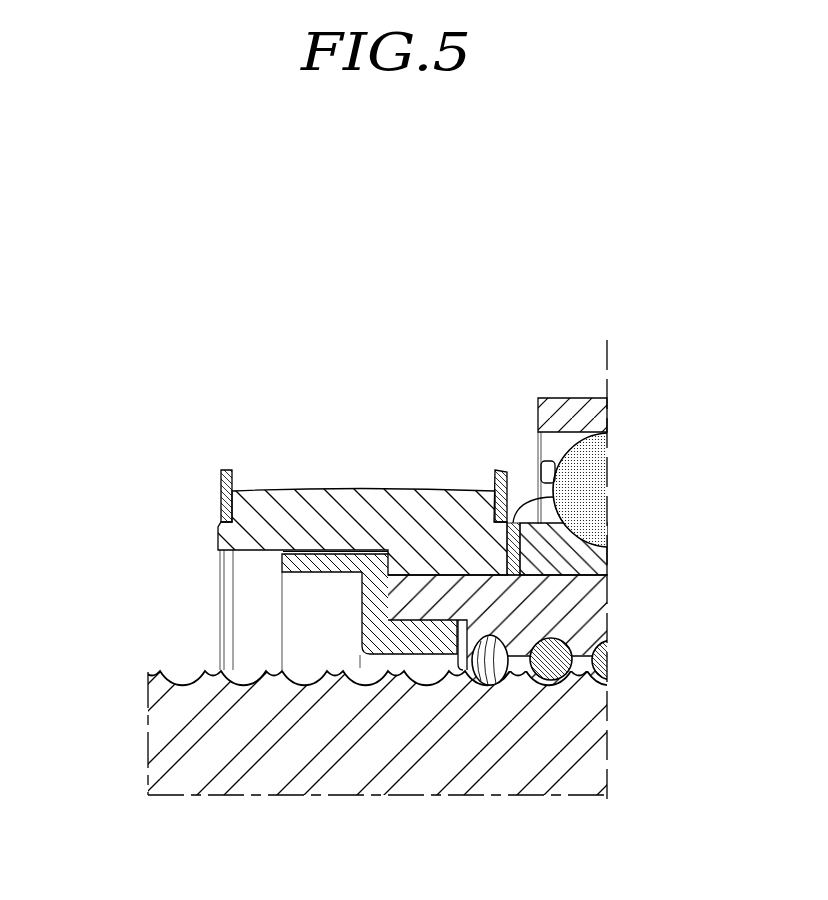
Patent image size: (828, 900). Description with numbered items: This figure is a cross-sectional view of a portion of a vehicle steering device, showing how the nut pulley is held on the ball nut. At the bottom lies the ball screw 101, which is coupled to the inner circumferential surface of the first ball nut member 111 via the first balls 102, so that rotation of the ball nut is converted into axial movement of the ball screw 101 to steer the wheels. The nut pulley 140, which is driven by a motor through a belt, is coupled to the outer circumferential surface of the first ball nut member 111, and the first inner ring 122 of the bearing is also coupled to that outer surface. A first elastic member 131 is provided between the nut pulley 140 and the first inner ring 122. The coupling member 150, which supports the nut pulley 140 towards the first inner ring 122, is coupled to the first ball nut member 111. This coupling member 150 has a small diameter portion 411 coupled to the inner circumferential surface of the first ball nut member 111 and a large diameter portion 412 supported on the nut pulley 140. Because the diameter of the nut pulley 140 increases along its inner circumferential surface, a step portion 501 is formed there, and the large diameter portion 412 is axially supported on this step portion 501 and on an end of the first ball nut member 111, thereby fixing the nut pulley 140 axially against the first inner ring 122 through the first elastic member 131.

The ball screw 101 is at (381, 773).
The first balls 102 is at (575, 640).
The first ball nut member 111 is at (597, 607).
The first inner ring 122 is at (590, 559).
The first elastic member 131 is at (560, 497).
The nut pulley 140 is at (316, 492).
The coupling member 150 is at (256, 594).
The small diameter portion 411 is at (362, 640).
The large diameter portion 412 is at (282, 566).
The step portion 501 is at (367, 552).